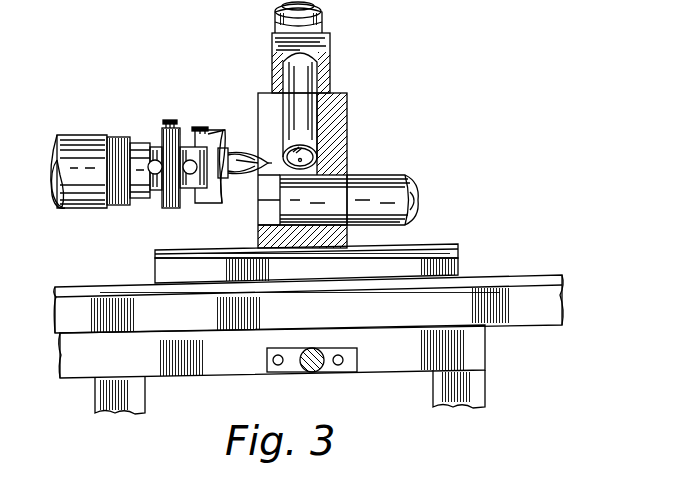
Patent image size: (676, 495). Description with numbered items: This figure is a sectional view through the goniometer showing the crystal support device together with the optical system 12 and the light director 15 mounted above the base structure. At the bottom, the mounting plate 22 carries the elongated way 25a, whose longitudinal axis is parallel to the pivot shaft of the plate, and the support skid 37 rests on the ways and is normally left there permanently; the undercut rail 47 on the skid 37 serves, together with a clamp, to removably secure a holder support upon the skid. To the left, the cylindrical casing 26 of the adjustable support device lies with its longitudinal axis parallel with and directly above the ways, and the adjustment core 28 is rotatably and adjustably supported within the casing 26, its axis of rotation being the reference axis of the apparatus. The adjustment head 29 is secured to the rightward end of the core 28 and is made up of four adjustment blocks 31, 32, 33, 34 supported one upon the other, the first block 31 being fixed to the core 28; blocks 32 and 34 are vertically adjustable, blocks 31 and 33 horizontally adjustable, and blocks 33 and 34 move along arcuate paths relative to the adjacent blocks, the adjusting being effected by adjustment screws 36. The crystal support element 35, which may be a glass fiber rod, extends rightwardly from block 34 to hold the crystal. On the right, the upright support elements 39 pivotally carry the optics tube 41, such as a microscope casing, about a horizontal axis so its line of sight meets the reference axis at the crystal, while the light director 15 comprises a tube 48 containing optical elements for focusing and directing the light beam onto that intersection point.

The optical system 12 is at (340, 77).
The light director 15 is at (391, 172).
The mounting plate 22 is at (473, 343).
The elongated way 25a is at (532, 312).
The cylindrical casing 26 is at (95, 150).
The adjustment core 28 is at (129, 128).
The adjustment head 29 is at (190, 115).
The first adjustment block 31 is at (175, 208).
The adjustment block 32 is at (185, 195).
The adjustment block 33 is at (208, 137).
The adjustment block 34 is at (235, 160).
The crystal support element 35 is at (260, 178).
The adjustment screws 36 is at (168, 121).
The support skid 37 is at (447, 266).
The upright support elements 39 is at (262, 108).
The optics tube 41 is at (305, 115).
The undercut rail 47 is at (445, 248).
The tube 48 is at (320, 193).